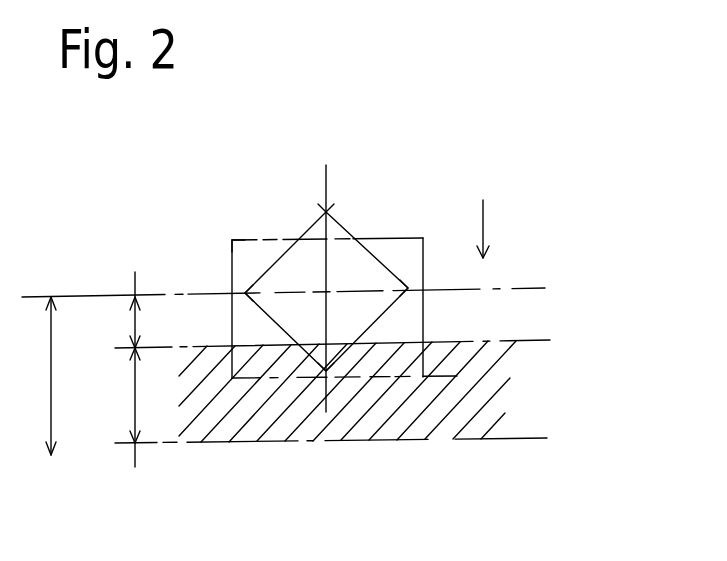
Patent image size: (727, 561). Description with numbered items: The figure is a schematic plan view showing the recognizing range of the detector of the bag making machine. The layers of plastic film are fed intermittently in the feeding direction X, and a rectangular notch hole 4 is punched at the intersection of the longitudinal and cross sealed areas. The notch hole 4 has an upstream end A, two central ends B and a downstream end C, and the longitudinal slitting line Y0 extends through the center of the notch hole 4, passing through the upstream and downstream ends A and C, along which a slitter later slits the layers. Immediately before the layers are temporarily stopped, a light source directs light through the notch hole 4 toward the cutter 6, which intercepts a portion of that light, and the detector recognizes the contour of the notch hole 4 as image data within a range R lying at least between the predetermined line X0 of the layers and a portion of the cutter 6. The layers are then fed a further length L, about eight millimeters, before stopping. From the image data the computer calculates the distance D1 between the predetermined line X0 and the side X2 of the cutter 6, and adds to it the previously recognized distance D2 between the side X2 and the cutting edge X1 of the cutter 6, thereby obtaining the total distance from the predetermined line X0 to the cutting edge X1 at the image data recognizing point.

The notch hole 4 is at (303, 265).
The cutter 6 is at (432, 417).
The range R is at (245, 240).
The upstream end A is at (326, 212).
The central ends B is at (245, 293).
The downstream end C is at (326, 371).
The feeding direction X is at (496, 229).
The longitudinal line Y0 is at (323, 182).
The predetermined line X0 is at (522, 286).
The cutting edge X1 is at (532, 435).
The side X2 is at (528, 338).
The length L is at (36, 376).
The distance D1 is at (112, 310).
The distance D2 is at (113, 407).